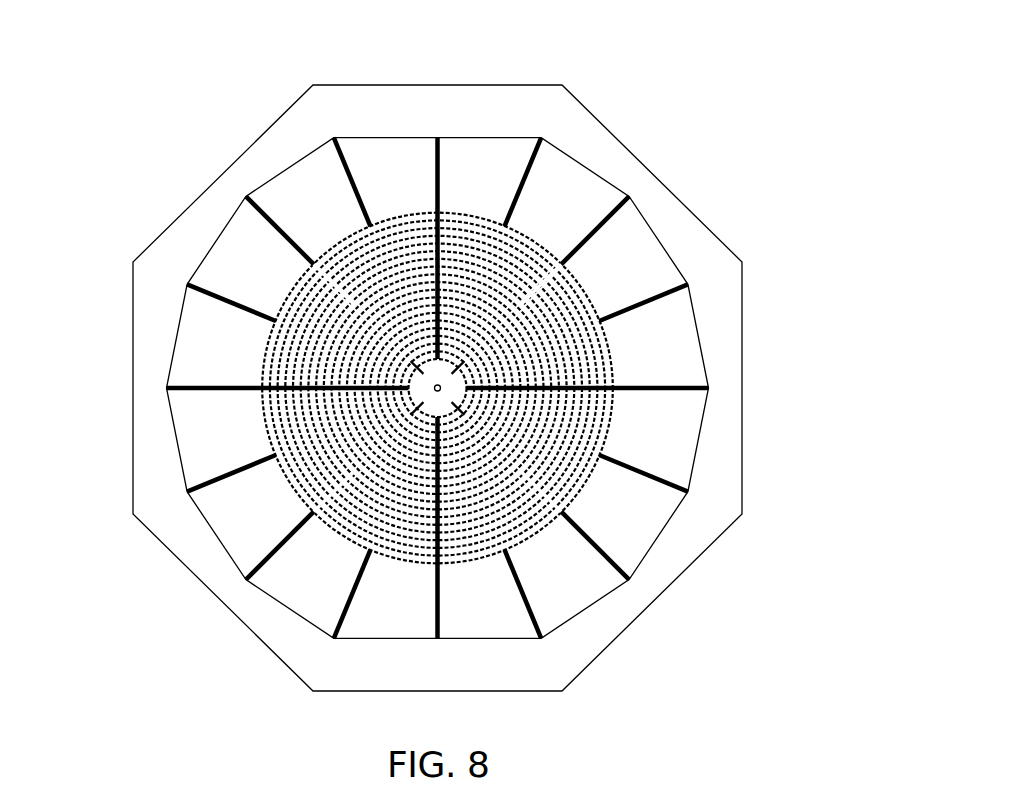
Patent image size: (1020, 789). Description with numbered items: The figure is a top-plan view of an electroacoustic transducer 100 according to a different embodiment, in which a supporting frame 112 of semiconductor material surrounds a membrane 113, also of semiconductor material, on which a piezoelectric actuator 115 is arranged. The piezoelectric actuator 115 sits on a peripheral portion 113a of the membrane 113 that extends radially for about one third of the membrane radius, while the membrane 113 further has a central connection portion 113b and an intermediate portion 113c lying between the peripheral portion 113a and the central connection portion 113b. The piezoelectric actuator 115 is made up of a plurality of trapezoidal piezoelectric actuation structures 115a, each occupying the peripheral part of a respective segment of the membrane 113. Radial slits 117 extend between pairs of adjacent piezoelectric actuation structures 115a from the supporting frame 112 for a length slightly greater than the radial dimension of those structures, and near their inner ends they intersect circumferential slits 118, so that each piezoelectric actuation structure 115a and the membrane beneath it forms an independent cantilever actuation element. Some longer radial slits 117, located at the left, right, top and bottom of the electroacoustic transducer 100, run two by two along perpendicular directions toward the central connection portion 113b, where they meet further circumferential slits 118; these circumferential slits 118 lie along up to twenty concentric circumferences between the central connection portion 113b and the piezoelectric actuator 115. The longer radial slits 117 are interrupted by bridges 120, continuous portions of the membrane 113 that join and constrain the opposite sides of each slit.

The electroacoustic transducer 100 is at (192, 152).
The supporting frame 112 is at (363, 102).
The membrane 113 is at (578, 141).
The peripheral portion 113a is at (632, 267).
The central connection portion 113b is at (432, 406).
The intermediate portion 113c is at (586, 420).
The piezoelectric actuator 115 is at (217, 230).
The piezoelectric actuation structures 115a is at (310, 578).
The radial slits 117 is at (378, 205).
The circumferential slits 118 is at (584, 367).
The bridges 120 is at (450, 278).
The center C is at (440, 386).